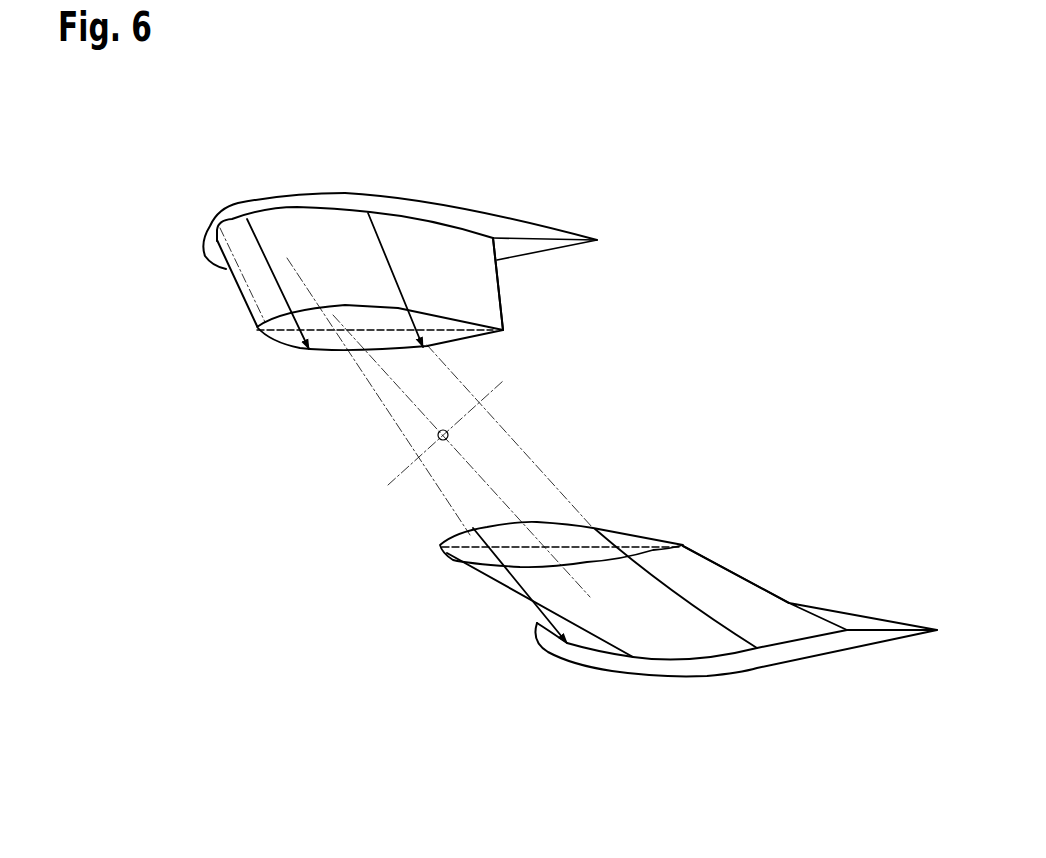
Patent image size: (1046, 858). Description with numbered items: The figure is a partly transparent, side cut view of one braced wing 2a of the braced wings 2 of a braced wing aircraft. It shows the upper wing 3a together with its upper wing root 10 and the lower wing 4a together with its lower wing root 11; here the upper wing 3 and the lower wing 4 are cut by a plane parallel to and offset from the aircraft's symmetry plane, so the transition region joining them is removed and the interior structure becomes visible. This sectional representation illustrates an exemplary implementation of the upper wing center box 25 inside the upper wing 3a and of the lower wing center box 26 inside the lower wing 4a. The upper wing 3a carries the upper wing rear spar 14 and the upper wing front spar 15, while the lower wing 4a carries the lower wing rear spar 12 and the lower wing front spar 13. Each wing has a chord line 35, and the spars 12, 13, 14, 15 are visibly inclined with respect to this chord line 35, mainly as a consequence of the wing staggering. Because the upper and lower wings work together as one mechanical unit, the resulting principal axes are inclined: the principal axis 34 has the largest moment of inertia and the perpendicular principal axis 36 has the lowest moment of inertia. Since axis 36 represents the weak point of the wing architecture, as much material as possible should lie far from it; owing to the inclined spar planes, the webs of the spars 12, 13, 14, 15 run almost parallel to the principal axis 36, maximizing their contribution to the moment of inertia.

The braced wings 2 is at (268, 150).
The braced wing 2a is at (188, 197).
The upper wing 3 is at (225, 287).
The upper wing 3a is at (500, 280).
The lower wing 4 is at (477, 596).
The lower wing 4a is at (752, 578).
The upper wing root 10 is at (476, 207).
The lower wing root 11 is at (752, 670).
The lower wing rear spar 12 is at (609, 527).
The lower wing front spar 13 is at (466, 542).
The upper wing rear spar 14 is at (430, 336).
The upper wing front spar 15 is at (303, 342).
The upper wing center box 25 is at (322, 232).
The lower wing center box 26 is at (655, 635).
The principal axis with largest moment of inertia 34 is at (507, 387).
The chord line 35 is at (335, 333).
The principal axis with lowest moment of inertia 36 is at (477, 465).